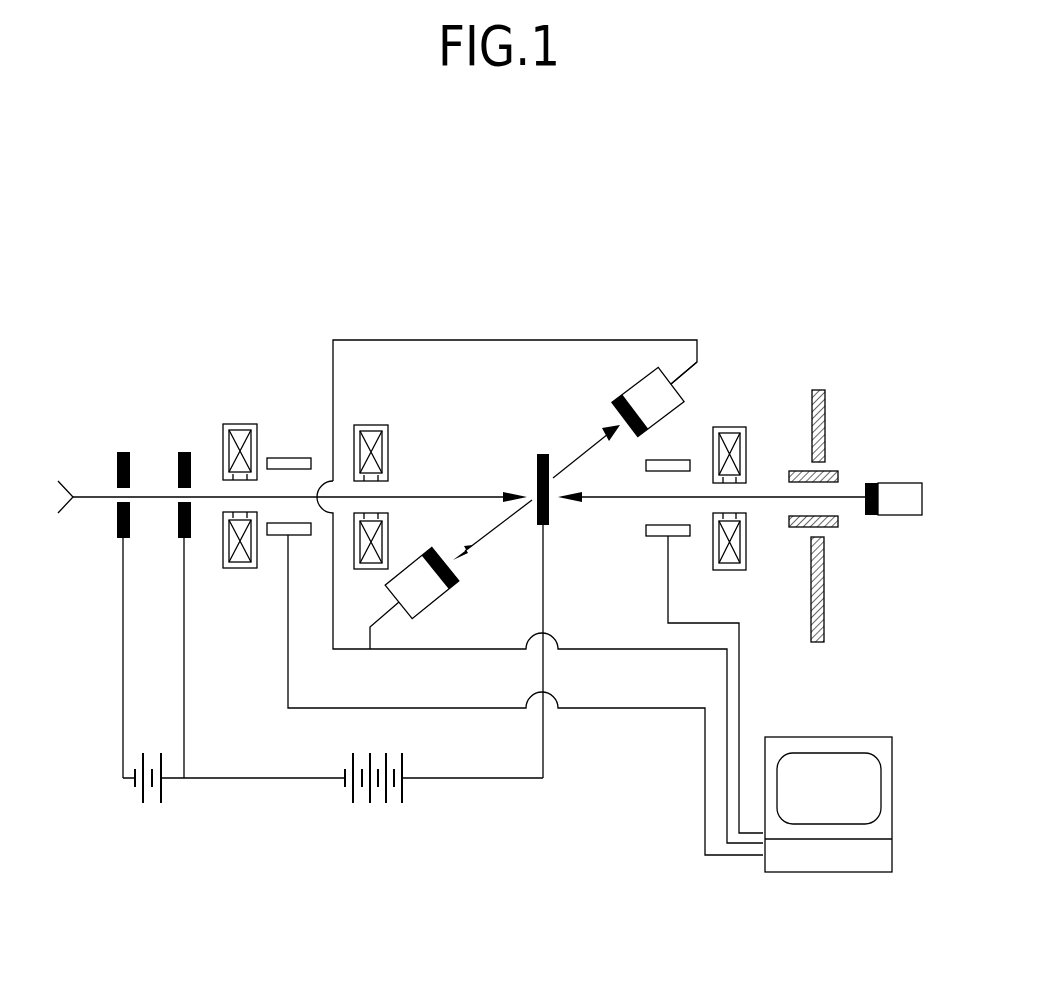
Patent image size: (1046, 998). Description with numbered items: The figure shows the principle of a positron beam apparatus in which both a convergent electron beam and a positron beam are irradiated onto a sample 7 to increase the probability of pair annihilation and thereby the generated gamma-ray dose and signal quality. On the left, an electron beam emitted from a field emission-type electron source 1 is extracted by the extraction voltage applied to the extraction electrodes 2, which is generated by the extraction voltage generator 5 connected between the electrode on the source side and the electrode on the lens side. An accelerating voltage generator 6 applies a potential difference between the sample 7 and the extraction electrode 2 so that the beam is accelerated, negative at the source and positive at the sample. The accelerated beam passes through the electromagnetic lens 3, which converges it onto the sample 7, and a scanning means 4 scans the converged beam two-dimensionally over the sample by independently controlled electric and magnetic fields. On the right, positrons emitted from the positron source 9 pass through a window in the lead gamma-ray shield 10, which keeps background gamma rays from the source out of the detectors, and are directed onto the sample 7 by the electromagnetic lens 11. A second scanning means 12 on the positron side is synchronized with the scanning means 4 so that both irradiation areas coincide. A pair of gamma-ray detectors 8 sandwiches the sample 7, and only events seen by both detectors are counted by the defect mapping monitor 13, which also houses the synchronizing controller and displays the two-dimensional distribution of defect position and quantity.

The electron source 1 is at (62, 472).
The extraction electrodes 2 is at (184, 450).
The electromagnetic lens 3 is at (239, 424).
The scanning means 4 is at (288, 458).
The extraction voltage generator 5 is at (234, 800).
The accelerating voltage generator 6 is at (444, 800).
The sample 7 is at (701, 616).
The γ-ray detectors 8 is at (533, 504).
The positron source 9 is at (893, 518).
The γ-ray shield 10 is at (814, 496).
The electromagnetic lens 11 is at (723, 428).
The second scanning means 12 is at (650, 537).
The defect mapping monitor 13 is at (856, 804).